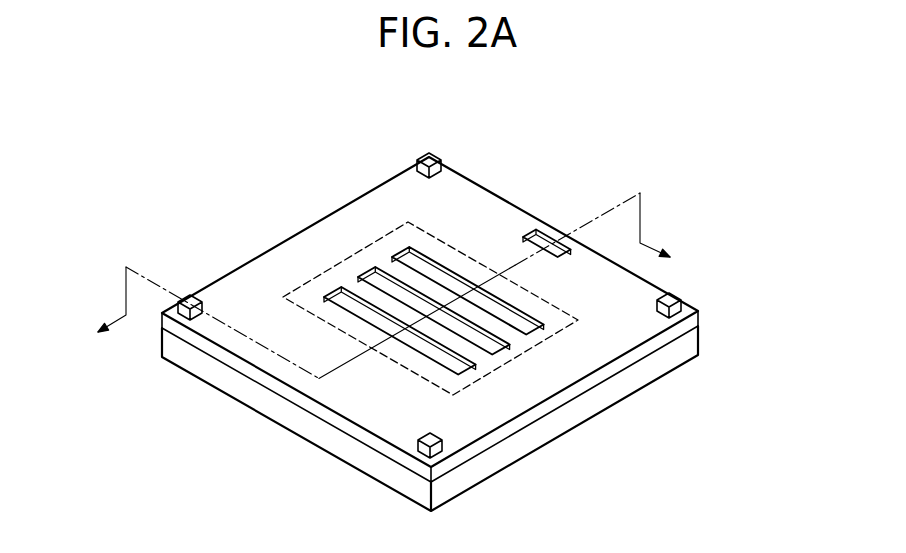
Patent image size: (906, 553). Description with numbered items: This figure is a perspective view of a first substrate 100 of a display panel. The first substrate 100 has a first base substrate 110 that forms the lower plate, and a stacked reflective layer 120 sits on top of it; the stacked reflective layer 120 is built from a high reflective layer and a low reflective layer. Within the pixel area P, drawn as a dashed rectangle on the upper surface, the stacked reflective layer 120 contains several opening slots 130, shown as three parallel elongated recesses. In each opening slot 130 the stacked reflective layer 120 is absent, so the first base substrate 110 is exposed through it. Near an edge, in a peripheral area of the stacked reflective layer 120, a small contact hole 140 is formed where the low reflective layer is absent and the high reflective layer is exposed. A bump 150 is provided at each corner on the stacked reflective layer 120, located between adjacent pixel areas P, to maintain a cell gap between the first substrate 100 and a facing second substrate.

The first substrate 100 is at (333, 140).
The first base substrate 110 is at (287, 415).
The stacked reflective layer 120 is at (248, 370).
The opening slot 130 is at (418, 265).
The contact hole 140 is at (540, 238).
The bump 150 is at (200, 296).
The pixel area P is at (345, 257).